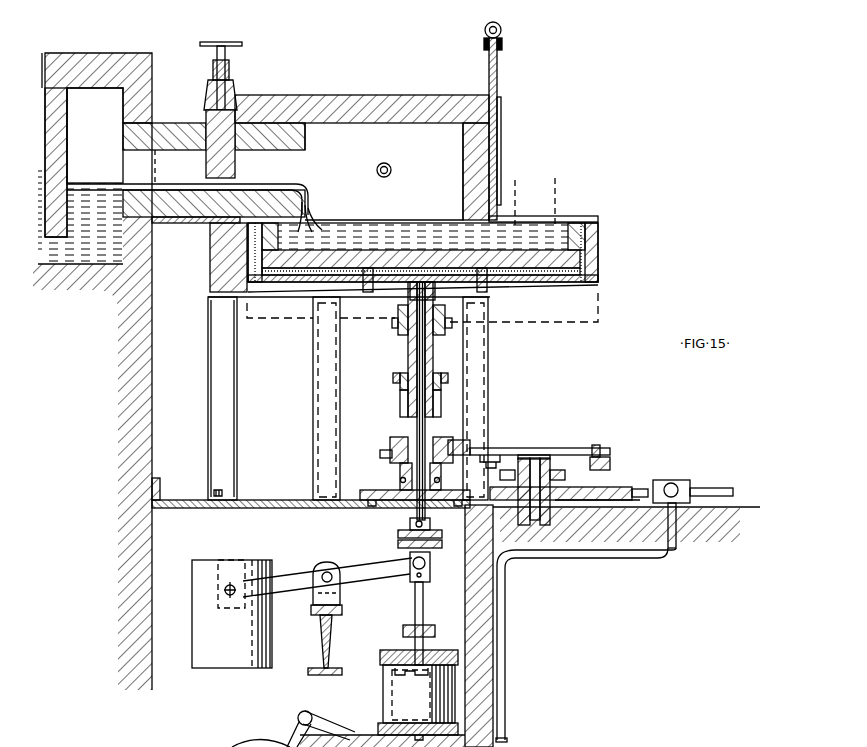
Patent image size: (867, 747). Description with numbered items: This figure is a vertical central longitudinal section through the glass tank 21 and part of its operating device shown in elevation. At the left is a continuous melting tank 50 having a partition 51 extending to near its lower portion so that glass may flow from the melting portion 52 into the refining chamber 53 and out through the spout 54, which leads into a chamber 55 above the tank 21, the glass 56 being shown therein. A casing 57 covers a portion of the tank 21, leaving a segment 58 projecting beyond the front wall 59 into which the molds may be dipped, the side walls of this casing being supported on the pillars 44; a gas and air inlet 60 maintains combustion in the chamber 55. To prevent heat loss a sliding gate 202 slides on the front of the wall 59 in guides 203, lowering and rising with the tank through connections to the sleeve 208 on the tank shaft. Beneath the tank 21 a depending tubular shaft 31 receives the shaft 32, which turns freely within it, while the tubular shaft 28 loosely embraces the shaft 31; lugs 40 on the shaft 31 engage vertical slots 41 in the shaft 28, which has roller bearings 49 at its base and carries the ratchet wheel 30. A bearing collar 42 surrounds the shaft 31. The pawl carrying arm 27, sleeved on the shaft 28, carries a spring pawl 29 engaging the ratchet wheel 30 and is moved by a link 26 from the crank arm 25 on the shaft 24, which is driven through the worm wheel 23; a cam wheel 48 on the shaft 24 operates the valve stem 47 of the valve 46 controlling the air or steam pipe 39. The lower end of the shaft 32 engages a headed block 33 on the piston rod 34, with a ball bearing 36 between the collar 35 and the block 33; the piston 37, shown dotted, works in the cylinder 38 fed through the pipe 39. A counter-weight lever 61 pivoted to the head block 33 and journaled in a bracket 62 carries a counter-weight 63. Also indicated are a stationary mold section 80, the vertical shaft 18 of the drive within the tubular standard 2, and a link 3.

The tubular standard 2 is at (683, 745).
The link 3 is at (713, 745).
The vertical shaft 18 is at (643, 745).
The tank 21 is at (602, 251).
The worm wheel 23 is at (568, 476).
The shaft 24 is at (535, 470).
The crank arm 25 is at (585, 466).
The link 26 is at (527, 458).
The pawl carrying arm 27 is at (500, 449).
The tubular shaft 28 is at (402, 439).
The spring pawl 29 is at (468, 448).
The ratchet wheel 30 is at (385, 455).
The depending tubular shaft 31 is at (432, 352).
The shaft 32 is at (415, 341).
The headed block 33 is at (430, 558).
The piston rod 34 is at (417, 598).
The collar 35 is at (408, 525).
The ball bearing 36 is at (398, 541).
The piston 37 is at (400, 679).
The cylinder 38 is at (418, 695).
The pipe 39 is at (506, 647).
The lugs 40 is at (400, 390).
The vertical slots 41 is at (403, 408).
The bearing collar 42 is at (392, 377).
The pillars 44 is at (220, 352).
The valve 46 is at (673, 480).
The valve stem 47 is at (643, 487).
The cam wheel 48 is at (605, 493).
The roller bearings 49 is at (400, 481).
The continuous melting tank 50 is at (87, 62).
The partition 51 is at (55, 147).
The melting portion 52 is at (40, 110).
The refining chamber 53 is at (108, 108).
The spout 54 is at (180, 160).
The chamber 55 is at (352, 148).
The glass 56 is at (388, 232).
The casing 57 is at (296, 103).
The segment 58 is at (580, 222).
The front wall 59 is at (474, 159).
The gas and air inlet 60 is at (392, 170).
The counter-weight lever 61 is at (356, 565).
The bracket 62 is at (345, 598).
The counter-weight 63 is at (229, 569).
The stationary mold section 80 is at (540, 178).
The sliding gate 202 is at (499, 63).
The guides 203 is at (503, 108).
The sleeve 208 is at (454, 323).